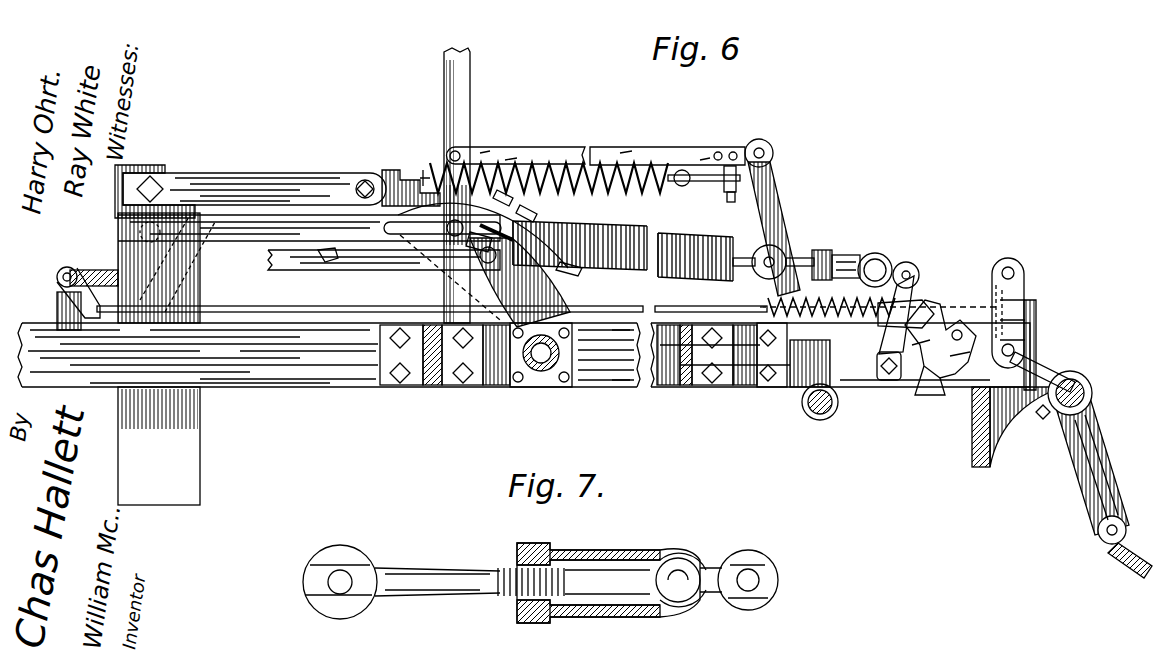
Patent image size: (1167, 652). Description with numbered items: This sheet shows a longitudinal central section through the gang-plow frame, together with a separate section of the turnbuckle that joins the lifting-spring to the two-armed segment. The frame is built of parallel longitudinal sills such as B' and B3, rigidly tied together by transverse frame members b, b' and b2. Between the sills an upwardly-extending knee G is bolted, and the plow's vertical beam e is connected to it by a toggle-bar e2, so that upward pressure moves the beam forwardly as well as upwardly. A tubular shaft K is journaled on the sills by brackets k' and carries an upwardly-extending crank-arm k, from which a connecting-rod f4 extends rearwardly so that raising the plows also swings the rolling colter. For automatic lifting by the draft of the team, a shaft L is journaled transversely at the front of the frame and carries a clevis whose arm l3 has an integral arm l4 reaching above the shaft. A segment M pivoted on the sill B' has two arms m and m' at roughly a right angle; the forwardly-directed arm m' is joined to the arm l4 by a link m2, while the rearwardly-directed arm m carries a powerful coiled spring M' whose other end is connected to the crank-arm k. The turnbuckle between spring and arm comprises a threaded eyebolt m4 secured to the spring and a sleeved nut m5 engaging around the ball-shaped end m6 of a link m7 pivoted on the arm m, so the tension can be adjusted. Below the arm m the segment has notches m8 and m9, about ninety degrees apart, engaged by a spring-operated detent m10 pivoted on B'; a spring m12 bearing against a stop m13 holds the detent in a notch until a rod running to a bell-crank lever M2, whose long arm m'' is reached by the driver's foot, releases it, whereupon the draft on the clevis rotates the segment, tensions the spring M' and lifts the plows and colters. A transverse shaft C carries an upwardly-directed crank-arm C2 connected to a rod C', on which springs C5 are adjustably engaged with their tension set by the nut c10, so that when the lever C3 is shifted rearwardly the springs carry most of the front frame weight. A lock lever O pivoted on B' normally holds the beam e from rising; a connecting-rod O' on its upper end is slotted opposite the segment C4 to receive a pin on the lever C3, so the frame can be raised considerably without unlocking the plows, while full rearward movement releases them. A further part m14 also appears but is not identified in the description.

In FIG. 6, the longitudinal sill B' is at (527, 367).
In FIG. 6, the vertical beam e is at (175, 495).
In FIG. 6, the toggle-bar e2 is at (255, 180).
In FIG. 6, the knee G is at (392, 172).
In FIG. 6, the connecting-rod O' is at (309, 192).
In FIG. 6, the long arm of bell-crank lever m'' is at (351, 262).
In FIG. 6, the connecting-rod f4 is at (318, 258).
In FIG. 6, the bell-crank lever M2 is at (60, 268).
In FIG. 6, the lock lever O is at (406, 253).
In FIG. 6, the lever C3 is at (462, 127).
In FIG. 6, the rod C' is at (596, 132).
In FIG. 6, the nut c10 is at (746, 150).
In FIG. 6, the segment C4 is at (525, 188).
In FIG. 6, the spring C5 is at (590, 168).
In FIG. 6, the crank-arm C2 is at (780, 215).
In FIG. 6, the coiled spring M' is at (665, 227).
In FIG. 6, the threaded eyebolt m4 is at (795, 250).
In FIG. 7, the threaded eyebolt m4 is at (368, 575).
In FIG. 6, the sleeved nut m5 is at (848, 258).
In FIG. 7, the sleeved nut m5 is at (615, 555).
In FIG. 6, the ball-shaped end m6 is at (875, 270).
In FIG. 7, the ball-shaped end m6 is at (692, 568).
In FIG. 6, the link m7 is at (893, 268).
In FIG. 7, the link m7 is at (742, 562).
In FIG. 6, the rearwardly-directed arm m is at (920, 307).
In FIG. 6, the notch m8 is at (950, 327).
In FIG. 6, the detent m10 is at (880, 322).
In FIG. 6, the spring m12 is at (831, 342).
In FIG. 6, the stop m13 is at (790, 365).
In FIG. 6, the segment M is at (940, 373).
In FIG. 6, the notch m9 is at (925, 365).
In FIG. 6, the forwardly-directed arm m' is at (1007, 298).
In FIG. 6, the link m2 is at (1022, 305).
In FIG. 6, the transverse frame member b is at (1011, 453).
In FIG. 6, the shaft L is at (1085, 388).
In FIG. 6, the clevis arm l3 is at (1092, 432).
In FIG. 6, the arm l4 is at (1040, 375).
In FIG. 6, the transverse shaft C is at (821, 415).
In FIG. 6, the longitudinal sill B3 is at (425, 392).
In FIG. 6, the transverse frame member b2 is at (460, 390).
In FIG. 6, the tubular shaft K is at (537, 385).
In FIG. 6, the bracket k' is at (535, 334).
In FIG. 6, the crank-arm k is at (498, 258).
In FIG. 6, the pin m14 is at (630, 370).
In FIG. 6, the transverse frame member b' is at (707, 381).